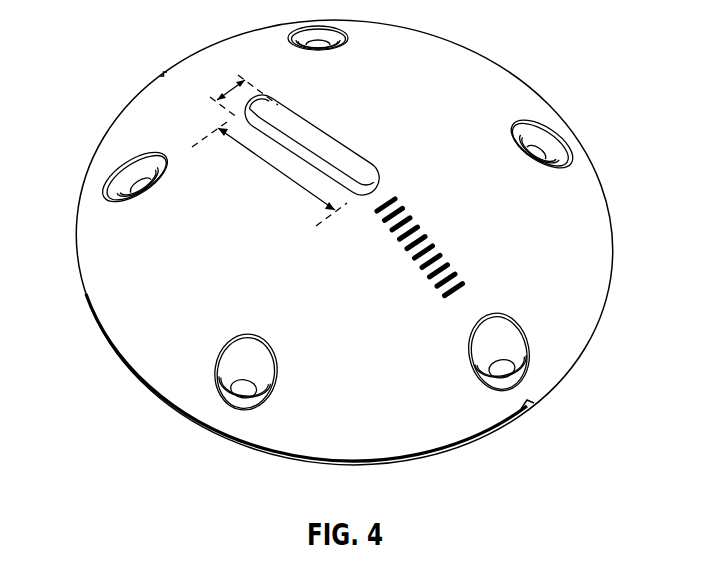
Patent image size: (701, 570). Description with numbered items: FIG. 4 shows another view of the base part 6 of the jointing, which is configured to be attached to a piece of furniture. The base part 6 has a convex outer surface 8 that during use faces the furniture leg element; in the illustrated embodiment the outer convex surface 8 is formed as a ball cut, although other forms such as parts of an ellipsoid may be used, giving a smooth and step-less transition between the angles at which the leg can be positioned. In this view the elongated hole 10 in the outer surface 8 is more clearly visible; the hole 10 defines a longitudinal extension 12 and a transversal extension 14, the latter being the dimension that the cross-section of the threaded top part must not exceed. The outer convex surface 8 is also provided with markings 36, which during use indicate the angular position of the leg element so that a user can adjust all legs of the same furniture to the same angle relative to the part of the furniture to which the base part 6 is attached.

The base part 6 is at (109, 53).
The convex outer surface 8 is at (121, 302).
The elongated hole 10 is at (285, 137).
The longitudinal extension 12 is at (187, 147).
The transversal extension 14 is at (236, 86).
The markings 36 is at (473, 277).